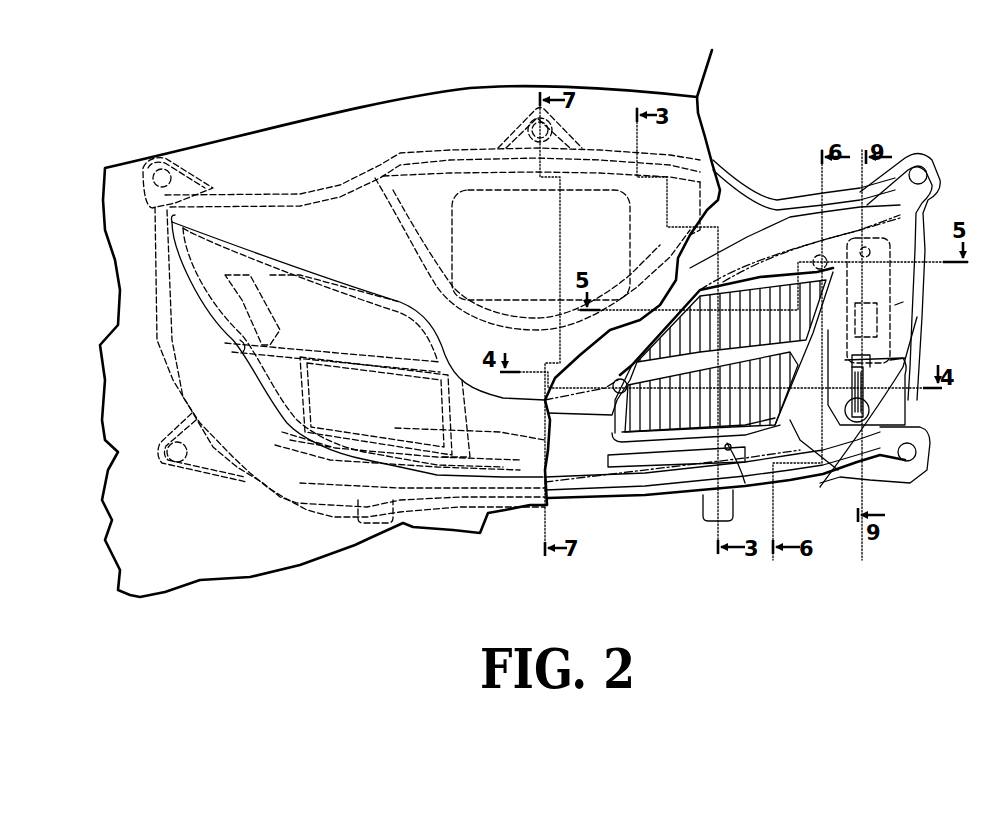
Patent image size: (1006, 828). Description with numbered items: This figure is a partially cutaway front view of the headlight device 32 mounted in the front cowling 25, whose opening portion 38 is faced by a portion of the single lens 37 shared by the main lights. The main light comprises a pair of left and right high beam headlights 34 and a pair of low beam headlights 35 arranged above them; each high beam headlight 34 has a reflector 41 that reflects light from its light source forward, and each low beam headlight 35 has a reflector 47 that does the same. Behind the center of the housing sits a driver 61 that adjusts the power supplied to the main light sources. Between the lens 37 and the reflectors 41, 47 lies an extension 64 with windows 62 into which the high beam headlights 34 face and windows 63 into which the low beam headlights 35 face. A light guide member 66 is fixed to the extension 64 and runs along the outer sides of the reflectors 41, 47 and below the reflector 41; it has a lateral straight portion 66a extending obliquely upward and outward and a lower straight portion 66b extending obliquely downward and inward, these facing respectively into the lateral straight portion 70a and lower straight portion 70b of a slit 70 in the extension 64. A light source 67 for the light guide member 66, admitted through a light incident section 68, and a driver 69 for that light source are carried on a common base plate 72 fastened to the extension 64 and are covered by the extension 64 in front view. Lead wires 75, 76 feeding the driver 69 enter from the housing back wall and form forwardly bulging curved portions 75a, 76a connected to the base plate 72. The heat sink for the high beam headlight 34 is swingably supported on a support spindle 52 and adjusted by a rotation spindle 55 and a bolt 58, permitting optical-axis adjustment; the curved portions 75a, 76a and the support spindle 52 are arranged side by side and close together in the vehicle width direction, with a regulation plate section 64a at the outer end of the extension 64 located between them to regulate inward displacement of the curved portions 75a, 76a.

The front cowling 25 is at (302, 557).
The headlight device 32 is at (438, 500).
The high beam headlight 34 is at (358, 432).
The low beam headlight 35 is at (301, 275).
The lens 37 is at (322, 452).
The opening portion 38 is at (243, 352).
The reflector for the high beam headlight 41 is at (645, 430).
The reflector for the low beam headlight 47 is at (707, 305).
The support spindle 52 is at (838, 470).
The rotation spindle 55 is at (820, 253).
The bolt 58 is at (620, 377).
The driver 61 is at (453, 232).
The window for the high beam headlight 62 is at (465, 430).
The window for the low beam headlight 63 is at (327, 292).
The extension 64 is at (775, 410).
The regulation plate section 64a is at (905, 358).
The light guide member 66 is at (291, 401).
The lateral straight portion 66a is at (820, 333).
The lower straight portion 66b is at (707, 450).
The light source for the light guide member 67 is at (920, 236).
The light incident section 68 is at (858, 250).
The driver for the light guide member 69 is at (900, 303).
The slit 70 is at (266, 343).
The lateral straight portion of the slit 70a is at (877, 315).
The lower straight portion of the slit 70b is at (727, 427).
The base plate 72 is at (890, 273).
The lead wire 75 is at (863, 412).
The curved portion 75a is at (866, 405).
The lead wire 76 is at (868, 400).
The curved portion 76a is at (860, 381).